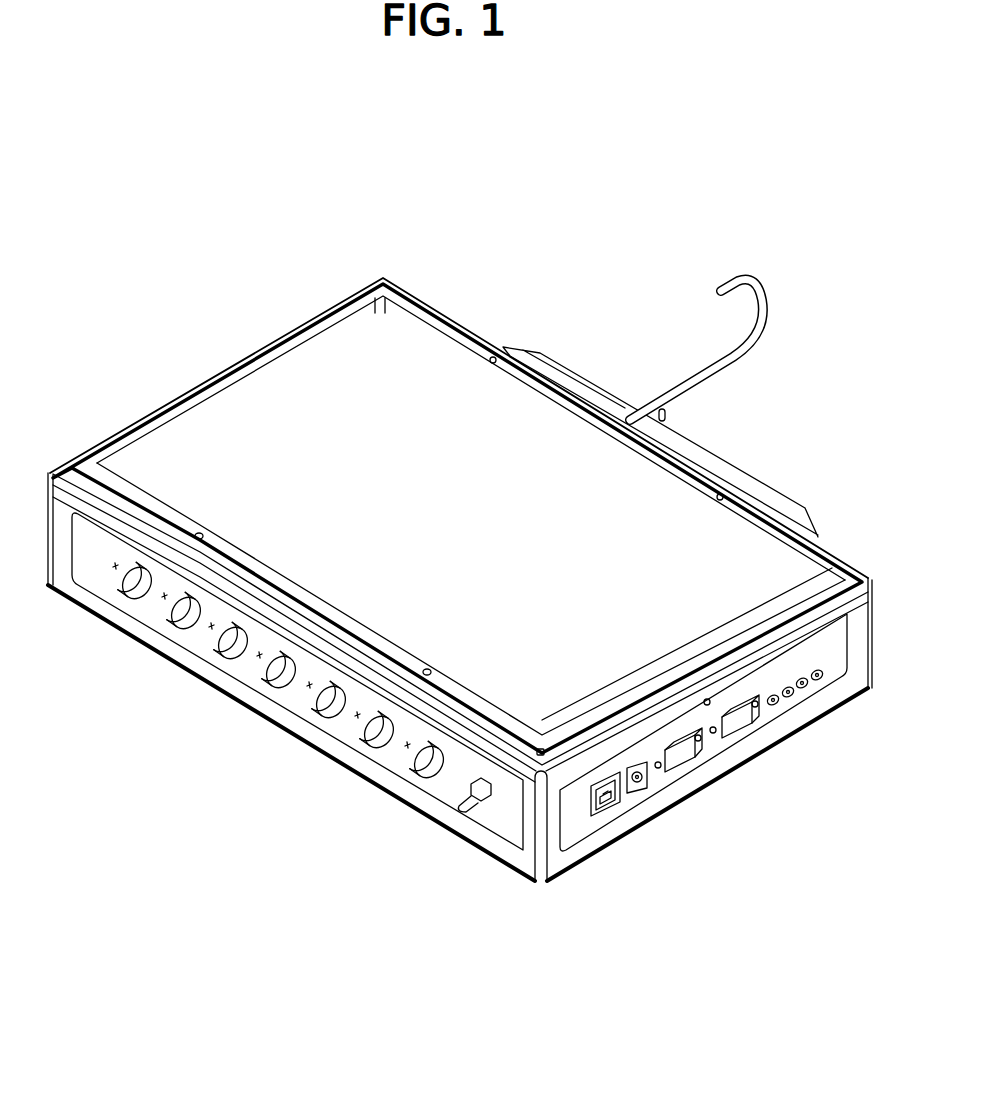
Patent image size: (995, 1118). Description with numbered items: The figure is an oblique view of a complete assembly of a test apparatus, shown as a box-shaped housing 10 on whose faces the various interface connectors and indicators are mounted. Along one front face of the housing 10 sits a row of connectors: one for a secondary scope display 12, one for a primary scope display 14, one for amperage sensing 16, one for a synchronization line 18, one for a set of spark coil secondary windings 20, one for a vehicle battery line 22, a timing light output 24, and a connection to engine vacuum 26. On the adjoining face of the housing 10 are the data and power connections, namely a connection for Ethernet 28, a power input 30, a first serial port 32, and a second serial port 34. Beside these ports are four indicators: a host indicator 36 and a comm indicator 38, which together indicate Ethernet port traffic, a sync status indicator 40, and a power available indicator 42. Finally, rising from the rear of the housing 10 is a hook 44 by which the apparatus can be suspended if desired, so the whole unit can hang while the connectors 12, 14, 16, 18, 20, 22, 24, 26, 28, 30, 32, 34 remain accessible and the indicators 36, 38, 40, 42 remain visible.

The housing 10 is at (157, 403).
The secondary scope display connector 12 is at (107, 598).
The primary scope display connector 14 is at (158, 630).
The amperage sensing connector 16 is at (207, 657).
The synchronization line connector 18 is at (255, 688).
The spark coil secondary windings connector 20 is at (307, 717).
The vehicle battery line connector 22 is at (352, 754).
The timing light output 24 is at (405, 779).
The engine vacuum connection 26 is at (460, 800).
The Ethernet connection 28 is at (620, 793).
The power input 30 is at (643, 780).
The first serial port 32 is at (690, 752).
The second serial port 34 is at (750, 720).
The host indicator 36 is at (775, 705).
The comm indicator 38 is at (790, 697).
The sync status indicator 40 is at (805, 688).
The power available indicator 42 is at (820, 680).
The hook 44 is at (710, 360).